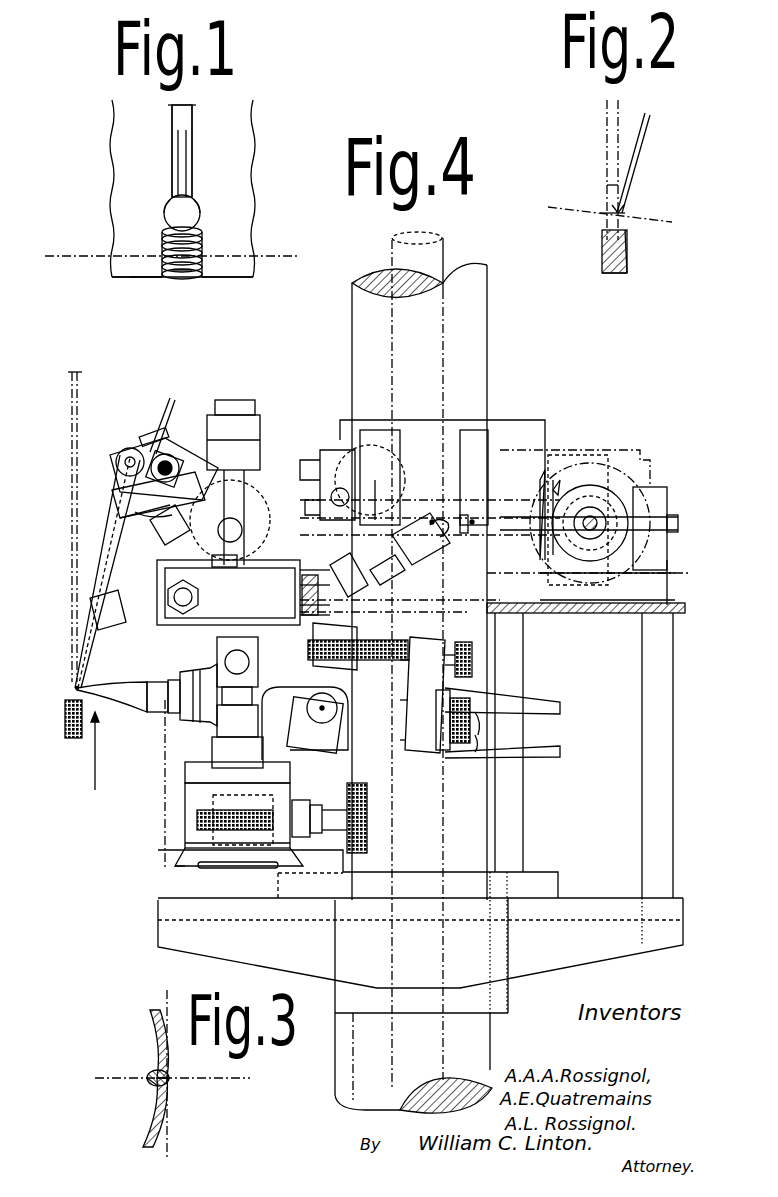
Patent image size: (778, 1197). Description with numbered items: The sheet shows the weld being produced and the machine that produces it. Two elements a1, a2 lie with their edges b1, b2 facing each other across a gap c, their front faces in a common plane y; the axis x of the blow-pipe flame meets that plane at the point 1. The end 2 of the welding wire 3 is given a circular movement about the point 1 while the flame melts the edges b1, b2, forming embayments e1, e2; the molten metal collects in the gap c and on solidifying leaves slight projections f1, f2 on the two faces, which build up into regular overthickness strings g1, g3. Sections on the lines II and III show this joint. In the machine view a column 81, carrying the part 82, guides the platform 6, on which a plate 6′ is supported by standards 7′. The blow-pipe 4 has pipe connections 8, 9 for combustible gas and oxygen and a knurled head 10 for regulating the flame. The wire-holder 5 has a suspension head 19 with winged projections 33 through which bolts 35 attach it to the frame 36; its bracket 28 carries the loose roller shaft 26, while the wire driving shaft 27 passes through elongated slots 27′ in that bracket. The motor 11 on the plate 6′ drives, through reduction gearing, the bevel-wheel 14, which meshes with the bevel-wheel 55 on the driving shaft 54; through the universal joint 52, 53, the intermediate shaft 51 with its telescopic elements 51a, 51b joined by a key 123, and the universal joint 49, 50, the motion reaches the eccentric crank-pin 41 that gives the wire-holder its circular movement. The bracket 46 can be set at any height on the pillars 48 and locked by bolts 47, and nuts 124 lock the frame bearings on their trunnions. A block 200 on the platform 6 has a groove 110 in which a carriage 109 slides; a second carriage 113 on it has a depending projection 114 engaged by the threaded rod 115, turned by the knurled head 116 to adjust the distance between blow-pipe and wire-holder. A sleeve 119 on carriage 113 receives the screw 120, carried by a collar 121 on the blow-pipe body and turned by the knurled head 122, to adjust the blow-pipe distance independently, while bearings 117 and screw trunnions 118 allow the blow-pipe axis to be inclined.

In FIG. 1, the point of the blow-pipe flame 1 is at (124, 240).
In FIG. 2, the point of the blow-pipe flame 1 is at (630, 212).
In FIG. 1, the end of the welding wire 2 is at (188, 198).
In FIG. 2, the end of the welding wire 2 is at (633, 193).
In FIG. 4, the end of the welding wire 2 is at (82, 688).
In FIG. 1, the welding wire 3 is at (186, 148).
In FIG. 2, the welding wire 3 is at (640, 128).
In FIG. 4, the welding wire 3 is at (162, 418).
In FIG. 4, the blow-pipe 4 is at (135, 706).
In FIG. 4, the wire-holder 5 is at (115, 542).
In FIG. 4, the platform 6 is at (595, 950).
In FIG. 4, the plate 6′ is at (680, 612).
In FIG. 4, the standards 7′ is at (518, 852).
In FIG. 4, the pipe connection 8 is at (548, 703).
In FIG. 4, the pipe connection 9 is at (548, 752).
In FIG. 4, the knurled head 10 is at (470, 705).
In FIG. 4, the motor 11 is at (340, 445).
In FIG. 4, the bevel-wheel 14 is at (592, 480).
In FIG. 4, the suspension head 19 is at (140, 500).
In FIG. 4, the shaft 26 is at (125, 455).
In FIG. 4, the driving shaft 27 is at (152, 440).
In FIG. 4, the elongated slots 27′ is at (135, 495).
In FIG. 4, the bracket 28 is at (122, 460).
In FIG. 4, the winged projections 33 is at (168, 528).
In FIG. 4, the bolts 35 is at (135, 512).
In FIG. 4, the frame 36 is at (176, 462).
In FIG. 4, the pin 41 is at (115, 749).
In FIG. 4, the bracket 46 is at (258, 640).
In FIG. 4, the set screws 47 is at (245, 668).
In FIG. 4, the pillars 48 is at (232, 400).
In FIG. 4, the universal joint 49 is at (305, 575).
In FIG. 4, the universal joint 50 is at (340, 570).
In FIG. 4, the intermediate shaft 51 is at (380, 585).
In FIG. 4, the telescopic shaft element 51a is at (396, 574).
In FIG. 4, the telescopic shaft element 51b is at (440, 555).
In FIG. 4, the universal joint 52 is at (430, 520).
In FIG. 4, the universal joint 53 is at (472, 520).
In FIG. 4, the driving shaft 54 is at (535, 520).
In FIG. 4, the bevel-wheel 55 is at (555, 490).
In FIG. 4, the column 81 is at (352, 314).
In FIG. 4, the central tube 82 is at (440, 242).
In FIG. 4, the carriage 109 is at (188, 843).
In FIG. 4, the groove 110 is at (178, 850).
In FIG. 4, the second carriage 113 is at (185, 772).
In FIG. 4, the depending projection 114 is at (222, 850).
In FIG. 4, the threaded rod 115 is at (197, 815).
In FIG. 4, the knurled head 116 is at (368, 800).
In FIG. 4, the bearings 117 is at (285, 720).
In FIG. 4, the screw trunnions 118 is at (325, 715).
In FIG. 4, the sleeve 119 is at (323, 636).
In FIG. 4, the threaded rod 120 is at (395, 644).
In FIG. 4, the collar 121 is at (430, 645).
In FIG. 4, the knurled head 122 is at (475, 648).
In FIG. 4, the key 123 is at (378, 480).
In FIG. 4, the nuts 124 is at (183, 580).
In FIG. 4, the block 200 is at (420, 874).
In FIG. 1, the element to be welded a1 is at (136, 270).
In FIG. 3, the element to be welded a1 is at (148, 1130).
In FIG. 1, the element to be welded a2 is at (225, 270).
In FIG. 3, the element to be welded a2 is at (150, 1031).
In FIG. 1, the edge b1 is at (172, 117).
In FIG. 1, the edge b2 is at (193, 117).
In FIG. 2, the edge b2 is at (597, 170).
In FIG. 4, the edge b2 is at (72, 383).
In FIG. 1, the gap c is at (180, 124).
In FIG. 1, the embayment e1 is at (175, 215).
In FIG. 1, the embayment e2 is at (200, 216).
In FIG. 1, the projection f1 is at (164, 250).
In FIG. 2, the projection f1 is at (626, 232).
In FIG. 3, the projection f1 is at (166, 1075).
In FIG. 2, the projection f2 is at (604, 232).
In FIG. 3, the projection f2 is at (150, 1083).
In FIG. 1, the overthickness string g1 is at (182, 270).
In FIG. 2, the overthickness string g1 is at (627, 271).
In FIG. 2, the groove edge g3 is at (604, 271).
In FIG. 2, the axis of the blow-pipe flame x is at (611, 209).
In FIG. 3, the common plane of front faces y is at (173, 1074).
In FIG. 3, the section line II— II is at (94, 1071).
In FIG. 1, the section line III— III is at (78, 253).